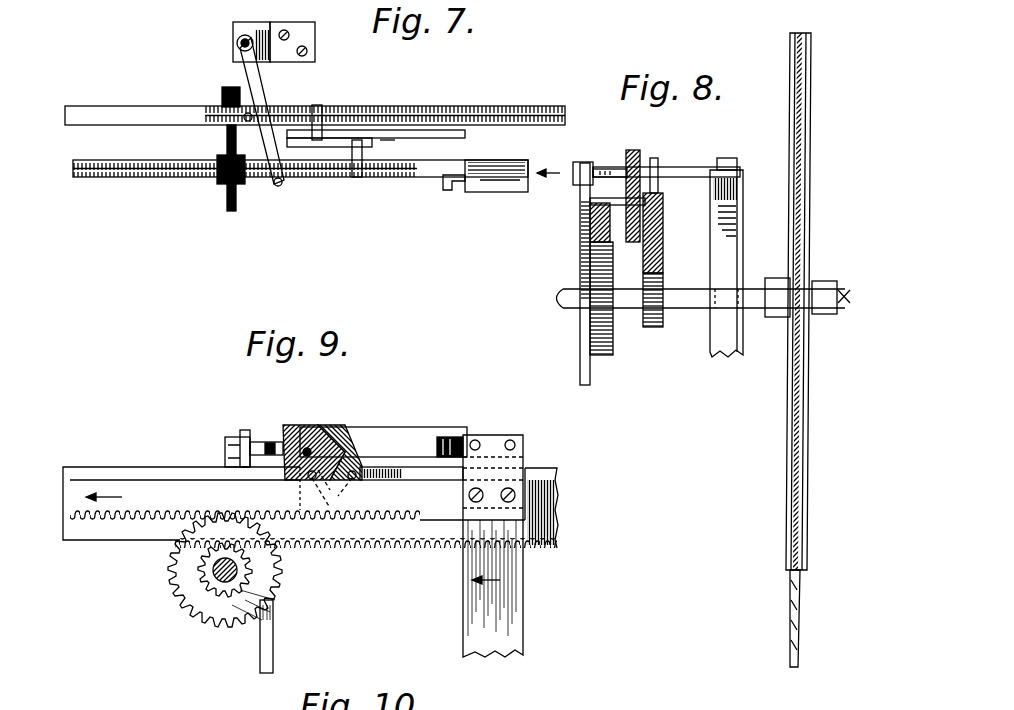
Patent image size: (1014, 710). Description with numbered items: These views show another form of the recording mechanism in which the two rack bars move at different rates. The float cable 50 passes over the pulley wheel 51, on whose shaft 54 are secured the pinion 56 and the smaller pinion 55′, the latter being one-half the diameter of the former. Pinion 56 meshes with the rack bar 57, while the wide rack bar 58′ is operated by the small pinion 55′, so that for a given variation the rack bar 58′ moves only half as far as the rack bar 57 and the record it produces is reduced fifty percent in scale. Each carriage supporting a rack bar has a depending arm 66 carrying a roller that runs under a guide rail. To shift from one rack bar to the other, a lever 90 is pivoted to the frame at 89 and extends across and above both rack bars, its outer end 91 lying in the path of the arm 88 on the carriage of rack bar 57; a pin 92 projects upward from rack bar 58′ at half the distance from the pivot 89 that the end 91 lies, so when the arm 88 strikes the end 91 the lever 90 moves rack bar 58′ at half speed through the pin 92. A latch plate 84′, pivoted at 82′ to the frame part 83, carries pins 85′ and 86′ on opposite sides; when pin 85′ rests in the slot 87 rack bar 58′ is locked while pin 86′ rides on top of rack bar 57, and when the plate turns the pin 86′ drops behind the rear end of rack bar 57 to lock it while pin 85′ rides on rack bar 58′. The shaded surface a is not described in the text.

In FIG. 8, the cable 50 is at (791, 600).
In FIG. 8, the pulley wheel 51 is at (787, 432).
In FIG. 7, the shaft 54 is at (228, 195).
In FIG. 8, the shaft 54 is at (750, 292).
In FIG. 9, the shaft 54 is at (213, 570).
In FIG. 7, the pinion 55′ is at (225, 100).
In FIG. 8, the pinion 55′ is at (662, 318).
In FIG. 9, the pinion 55′ is at (190, 586).
In FIG. 7, the pinion 56 is at (262, 183).
In FIG. 8, the pinion 56 is at (612, 340).
In FIG. 9, the pinion 56 is at (198, 600).
In FIG. 7, the rack bar 57 is at (160, 178).
In FIG. 8, the rack bar 57 is at (582, 236).
In FIG. 9, the rack bar 57 is at (150, 490).
In FIG. 7, the rack bar 58′ is at (186, 112).
In FIG. 8, the rack bar 58′ is at (708, 228).
In FIG. 9, the rack bar 58′ is at (556, 508).
In FIG. 9, the depending arm 66 is at (472, 566).
In FIG. 9, the pivot 82′ is at (307, 448).
In FIG. 8, the supporting part of the frame 83 is at (634, 150).
In FIG. 9, the supporting part of the frame 83 is at (385, 431).
In FIG. 7, the latch plate 84′ is at (300, 147).
In FIG. 8, the latch plate 84′ is at (626, 165).
In FIG. 9, the latch plate 84′ is at (335, 440).
In FIG. 7, the pin 85′ is at (317, 106).
In FIG. 8, the pin 85′ is at (665, 199).
In FIG. 9, the pin 85′ is at (310, 478).
In FIG. 7, the pin 86′ is at (357, 178).
In FIG. 8, the pin 86′ is at (605, 204).
In FIG. 9, the pin 86′ is at (357, 476).
In FIG. 7, the slot 87 is at (332, 129).
In FIG. 9, the slot 87 is at (345, 493).
In FIG. 7, the arm 88 is at (468, 184).
In FIG. 9, the arm 88 is at (458, 443).
In FIG. 7, the pivot 89 is at (237, 43).
In FIG. 8, the pivot 89 is at (730, 160).
In FIG. 9, the pivot 89 is at (237, 437).
In FIG. 7, the lever 90 is at (257, 108).
In FIG. 8, the lever 90 is at (684, 167).
In FIG. 9, the lever 90 is at (230, 446).
In FIG. 7, the outer end of lever 91 is at (280, 187).
In FIG. 7, the pin 92 is at (243, 120).
In FIG. 8, the pin 92 is at (655, 158).
In FIG. 9, the pin 92 is at (247, 430).
In FIG. 9, the shaded surface a is at (515, 605).